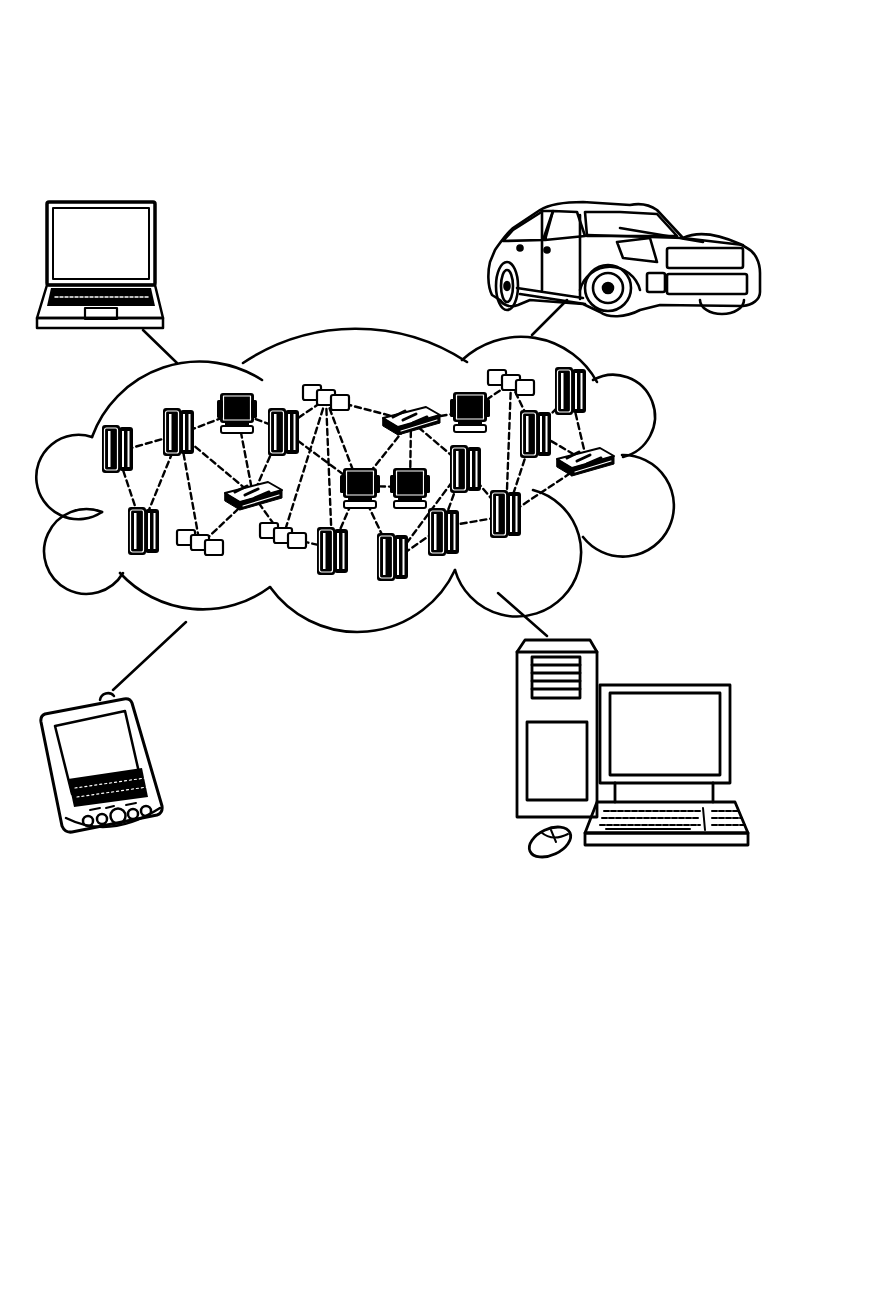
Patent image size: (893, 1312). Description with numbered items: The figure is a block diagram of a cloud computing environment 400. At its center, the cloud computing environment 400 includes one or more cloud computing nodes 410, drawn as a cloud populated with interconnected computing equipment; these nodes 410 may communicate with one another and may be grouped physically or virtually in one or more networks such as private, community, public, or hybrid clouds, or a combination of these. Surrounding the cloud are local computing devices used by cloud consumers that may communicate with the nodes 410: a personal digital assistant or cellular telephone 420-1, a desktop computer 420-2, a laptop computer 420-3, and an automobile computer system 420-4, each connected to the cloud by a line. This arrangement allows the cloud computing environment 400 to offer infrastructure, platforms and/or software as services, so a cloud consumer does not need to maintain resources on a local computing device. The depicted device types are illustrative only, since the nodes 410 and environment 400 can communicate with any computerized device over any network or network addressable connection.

The cloud computing environment 400 is at (284, 57).
The cloud computing nodes 410 is at (627, 487).
The personal digital assistant (PDA) or cellular telephone 420-1 is at (145, 757).
The desktop computer 420-2 is at (663, 685).
The laptop computer 420-3 is at (155, 248).
The automobile computer system 420-4 is at (491, 264).